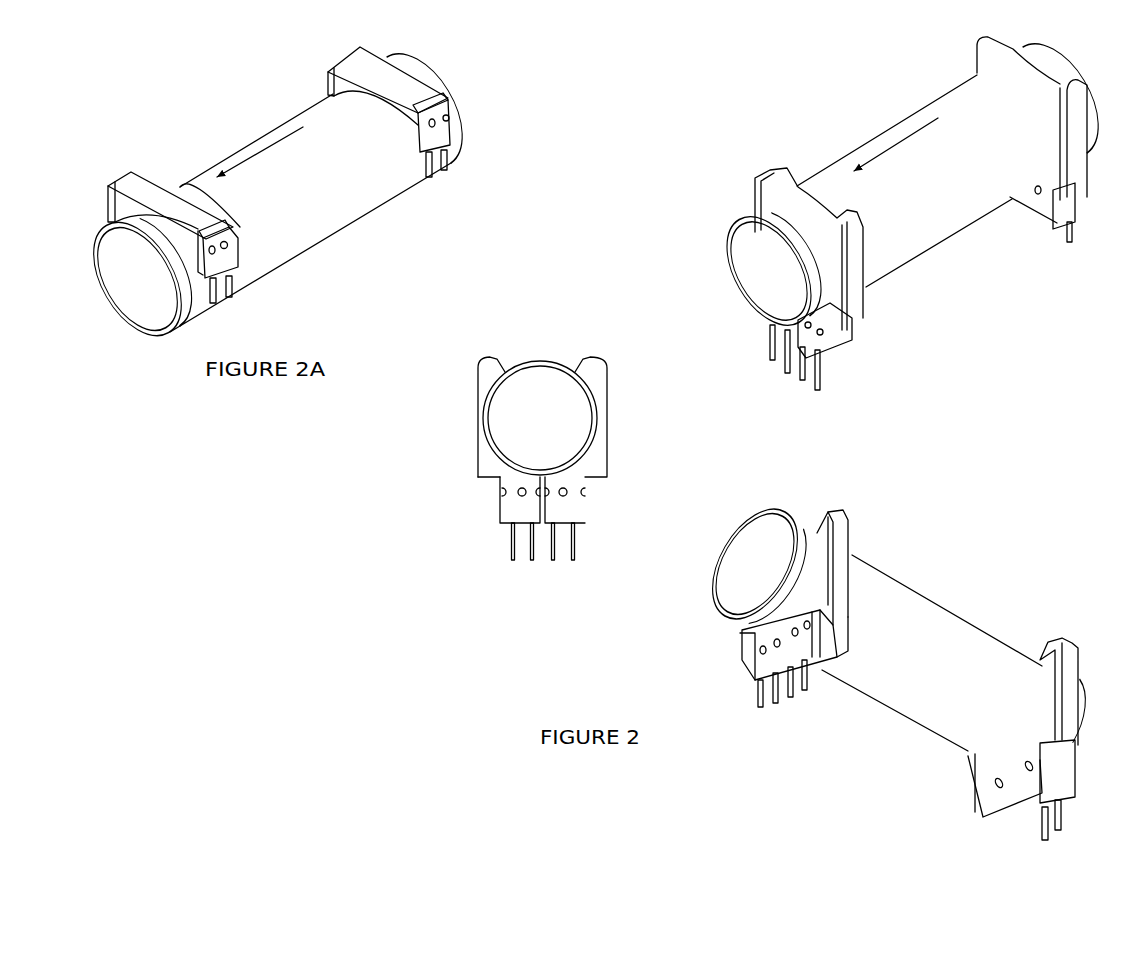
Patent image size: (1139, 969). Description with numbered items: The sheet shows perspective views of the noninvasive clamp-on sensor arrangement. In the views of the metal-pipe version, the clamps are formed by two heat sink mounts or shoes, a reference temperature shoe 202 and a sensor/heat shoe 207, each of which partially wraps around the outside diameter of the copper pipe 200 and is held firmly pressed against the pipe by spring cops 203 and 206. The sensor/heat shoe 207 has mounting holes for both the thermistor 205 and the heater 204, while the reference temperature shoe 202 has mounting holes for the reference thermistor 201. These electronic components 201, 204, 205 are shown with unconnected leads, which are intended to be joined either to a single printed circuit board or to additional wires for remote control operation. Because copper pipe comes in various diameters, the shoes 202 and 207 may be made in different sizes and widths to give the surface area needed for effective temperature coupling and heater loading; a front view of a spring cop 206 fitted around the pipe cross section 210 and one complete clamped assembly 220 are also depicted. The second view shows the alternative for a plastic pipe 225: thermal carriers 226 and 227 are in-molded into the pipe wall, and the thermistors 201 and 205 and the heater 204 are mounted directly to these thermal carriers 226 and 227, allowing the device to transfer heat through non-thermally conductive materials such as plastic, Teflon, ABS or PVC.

In FIG. 2, the copper pipe 200 is at (890, 592).
In FIG. 2A, the reference thermistor 201 is at (445, 124).
In FIG. 2, the reference thermistor 201 is at (1070, 792).
In FIG. 2, the reference temperature shoe 202 is at (987, 798).
In FIG. 2, the spring cop 203 is at (1080, 662).
In FIG. 2A, the heater 204 is at (118, 172).
In FIG. 2, the heater 204 is at (514, 518).
In FIG. 2A, the thermistor 205 is at (226, 261).
In FIG. 2, the thermistor 205 is at (565, 518).
In FIG. 2, the spring cop 206 is at (605, 354).
In FIG. 2, the sensor/heat shoe 207 is at (819, 667).
In FIG. 2, the tube 210 is at (540, 418).
In FIG. 2, the flow tube assembly 220 is at (930, 269).
In FIG. 2A, the plastic pipe 225 is at (340, 229).
In FIG. 2A, the thermal carrier 226 is at (349, 59).
In FIG. 2A, the thermal carrier 227 is at (150, 190).